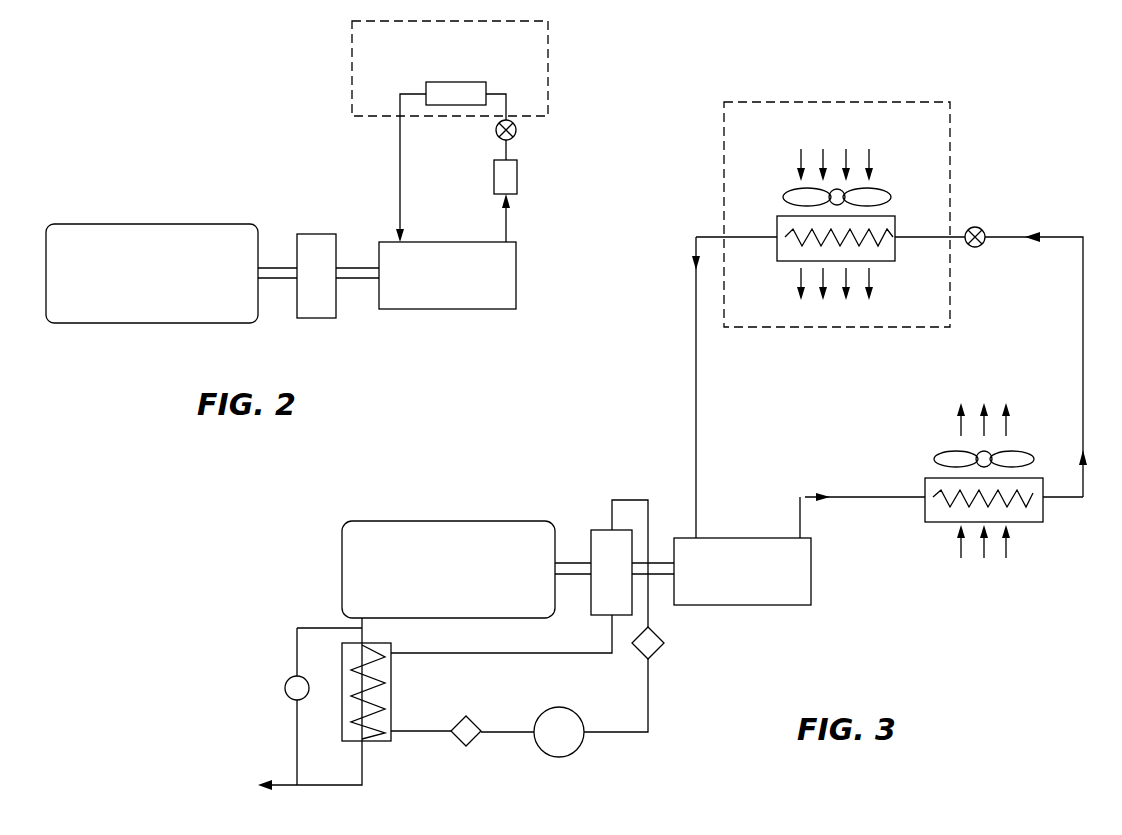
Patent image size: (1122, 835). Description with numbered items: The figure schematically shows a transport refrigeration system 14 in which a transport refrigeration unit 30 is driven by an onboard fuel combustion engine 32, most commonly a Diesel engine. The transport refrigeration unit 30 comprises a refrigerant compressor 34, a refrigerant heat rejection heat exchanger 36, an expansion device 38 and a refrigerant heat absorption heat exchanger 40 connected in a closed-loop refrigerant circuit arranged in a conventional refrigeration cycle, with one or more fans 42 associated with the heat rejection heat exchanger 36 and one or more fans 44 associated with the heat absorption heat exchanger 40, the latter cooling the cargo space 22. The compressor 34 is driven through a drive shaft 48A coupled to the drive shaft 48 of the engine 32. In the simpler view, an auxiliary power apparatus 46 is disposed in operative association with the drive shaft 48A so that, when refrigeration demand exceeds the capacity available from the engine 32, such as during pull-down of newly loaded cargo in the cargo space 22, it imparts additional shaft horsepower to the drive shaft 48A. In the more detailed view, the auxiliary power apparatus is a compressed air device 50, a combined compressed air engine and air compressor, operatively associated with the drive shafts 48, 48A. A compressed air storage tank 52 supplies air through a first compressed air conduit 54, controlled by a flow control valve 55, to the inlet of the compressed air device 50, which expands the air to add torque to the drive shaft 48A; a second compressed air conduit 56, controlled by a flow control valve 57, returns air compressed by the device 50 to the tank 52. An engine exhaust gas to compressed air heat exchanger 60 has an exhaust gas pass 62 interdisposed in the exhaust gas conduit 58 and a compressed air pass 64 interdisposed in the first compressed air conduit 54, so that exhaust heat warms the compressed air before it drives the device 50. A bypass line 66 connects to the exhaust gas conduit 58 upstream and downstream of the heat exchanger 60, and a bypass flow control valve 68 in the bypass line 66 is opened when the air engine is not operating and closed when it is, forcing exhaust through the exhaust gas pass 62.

In FIG. 2, the transport refrigeration system 14 is at (108, 148).
In FIG. 3, the transport refrigeration system 14 is at (376, 478).
In FIG. 2, the cargo space 22 is at (389, 55).
In FIG. 3, the cargo space 22 is at (762, 143).
In FIG. 2, the transport refrigeration unit 30 is at (314, 70).
In FIG. 3, the transport refrigeration unit 30 is at (1032, 168).
In FIG. 2, the fuel combustion engine 32 is at (199, 224).
In FIG. 3, the fuel combustion engine 32 is at (475, 521).
In FIG. 2, the refrigerant compressor 34 is at (443, 309).
In FIG. 3, the refrigerant compressor 34 is at (811, 572).
In FIG. 2, the refrigerant heat rejection heat exchanger 36 is at (517, 175).
In FIG. 3, the refrigerant heat rejection heat exchanger 36 is at (1043, 505).
In FIG. 2, the expansion device 38 is at (517, 134).
In FIG. 3, the expansion device 38 is at (982, 229).
In FIG. 2, the refrigerant heat absorption heat exchanger 40 is at (446, 82).
In FIG. 3, the refrigerant heat absorption heat exchanger 40 is at (887, 261).
In FIG. 3, the fan 42 is at (1017, 448).
In FIG. 3, the fan 44 is at (880, 190).
In FIG. 2, the auxiliary power apparatus 46 is at (316, 234).
In FIG. 2, the drive shaft 48 is at (278, 262).
In FIG. 3, the drive shaft 48 is at (573, 560).
In FIG. 2, the drive shaft 48A is at (366, 279).
In FIG. 3, the drive shaft 48A is at (660, 578).
In FIG. 3, the compressed air device 50 is at (600, 615).
In FIG. 3, the compressed air storage tank 52 is at (558, 707).
In FIG. 3, the first compressed air conduit 54 is at (523, 652).
In FIG. 3, the flow control valve 55 is at (457, 720).
In FIG. 3, the second compressed air conduit 56 is at (632, 500).
In FIG. 3, the flow control valve 57 is at (663, 648).
In FIG. 3, the exhaust gas conduit 58 is at (362, 632).
In FIG. 3, the engine exhaust gas to compressed air heat exchanger 60 is at (373, 741).
In FIG. 3, the exhaust gas pass 62 is at (355, 735).
In FIG. 3, the compressed air pass 64 is at (380, 710).
In FIG. 3, the bypass line 66 is at (297, 652).
In FIG. 3, the bypass flow control valve 68 is at (287, 695).